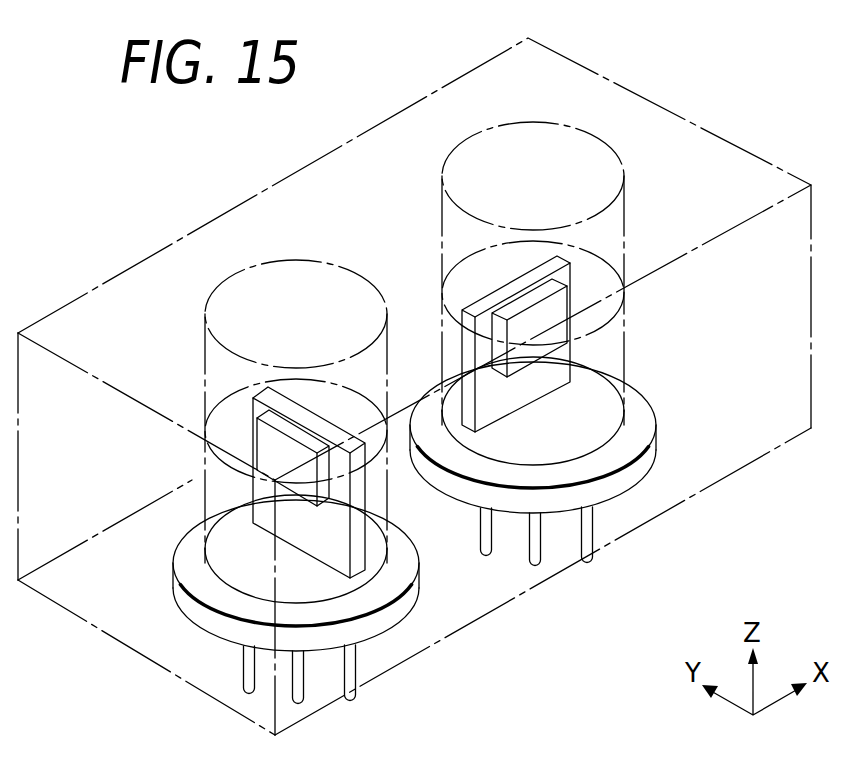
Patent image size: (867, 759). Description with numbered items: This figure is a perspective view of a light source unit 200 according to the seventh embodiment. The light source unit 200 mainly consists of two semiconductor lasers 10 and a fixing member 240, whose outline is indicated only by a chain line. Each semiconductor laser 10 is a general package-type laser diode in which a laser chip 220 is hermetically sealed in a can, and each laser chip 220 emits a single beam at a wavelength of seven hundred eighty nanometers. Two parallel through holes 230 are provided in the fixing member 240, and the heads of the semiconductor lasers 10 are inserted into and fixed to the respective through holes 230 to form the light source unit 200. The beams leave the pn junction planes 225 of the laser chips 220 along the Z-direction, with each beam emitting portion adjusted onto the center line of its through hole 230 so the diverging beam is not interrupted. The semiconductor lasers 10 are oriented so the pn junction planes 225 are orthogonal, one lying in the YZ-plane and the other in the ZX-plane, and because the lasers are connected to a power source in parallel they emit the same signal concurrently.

The semiconductor laser 10 is at (458, 493).
The light source unit 200 is at (706, 114).
The laser chip 220 is at (255, 437).
The pn junction plane 225 is at (300, 427).
The through hole 230 is at (258, 280).
The fixing member 240 is at (127, 648).